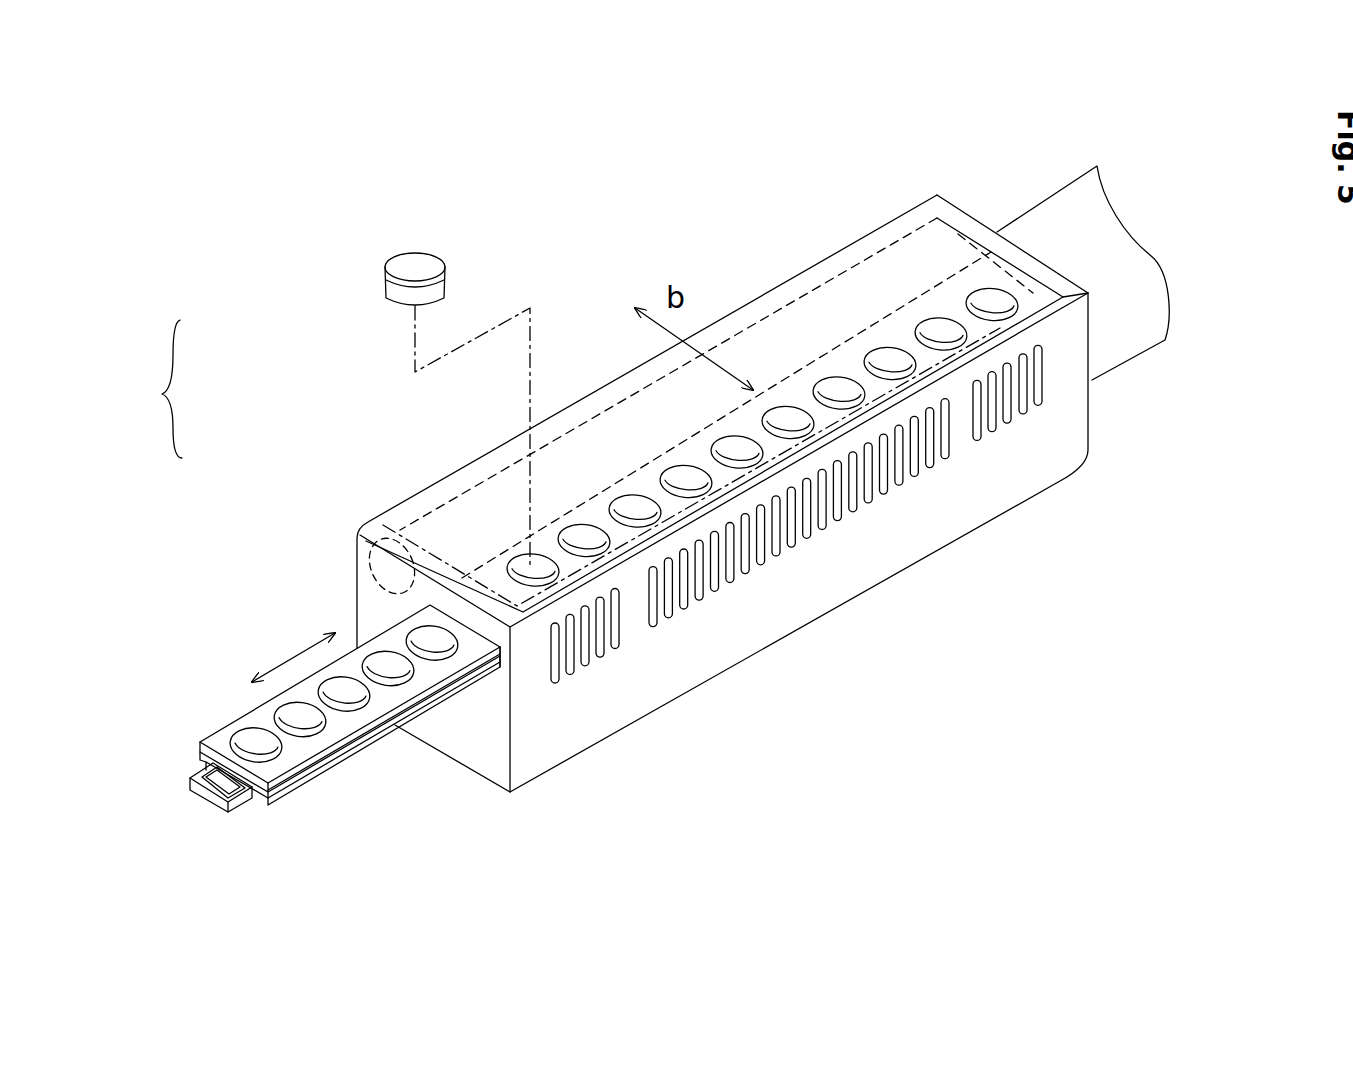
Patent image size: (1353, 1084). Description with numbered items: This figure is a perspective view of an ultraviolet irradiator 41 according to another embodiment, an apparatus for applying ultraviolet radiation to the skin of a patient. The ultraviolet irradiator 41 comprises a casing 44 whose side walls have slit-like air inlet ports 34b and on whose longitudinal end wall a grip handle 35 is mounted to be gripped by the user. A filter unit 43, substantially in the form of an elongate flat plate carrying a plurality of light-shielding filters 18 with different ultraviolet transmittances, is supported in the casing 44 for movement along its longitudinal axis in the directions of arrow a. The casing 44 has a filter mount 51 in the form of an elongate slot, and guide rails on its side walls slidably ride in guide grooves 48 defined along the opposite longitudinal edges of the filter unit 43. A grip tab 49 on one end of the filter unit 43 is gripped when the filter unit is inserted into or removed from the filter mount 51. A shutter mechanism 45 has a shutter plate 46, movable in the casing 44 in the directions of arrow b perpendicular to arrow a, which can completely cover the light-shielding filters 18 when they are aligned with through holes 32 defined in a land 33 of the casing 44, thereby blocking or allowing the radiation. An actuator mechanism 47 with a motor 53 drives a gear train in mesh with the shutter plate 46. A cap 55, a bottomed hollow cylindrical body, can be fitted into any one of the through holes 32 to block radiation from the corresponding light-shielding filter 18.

The light-shielding filter 18 is at (253, 735).
The through hole 32 is at (540, 562).
The land 33 is at (803, 400).
The air inlet port 34b is at (870, 487).
The grip handle 35 is at (1038, 222).
The ultraviolet irradiator 41 is at (1057, 826).
The filter unit 43 is at (393, 642).
The casing 44 is at (652, 683).
The shutter mechanism 45 is at (163, 395).
The shutter plate 46 is at (447, 520).
The actuator mechanism 47 is at (383, 525).
The guide groove 48 is at (336, 756).
The grip tab 49 is at (203, 773).
The filter mount 51 is at (486, 683).
The motor 53 is at (375, 553).
The cap 55 is at (420, 268).